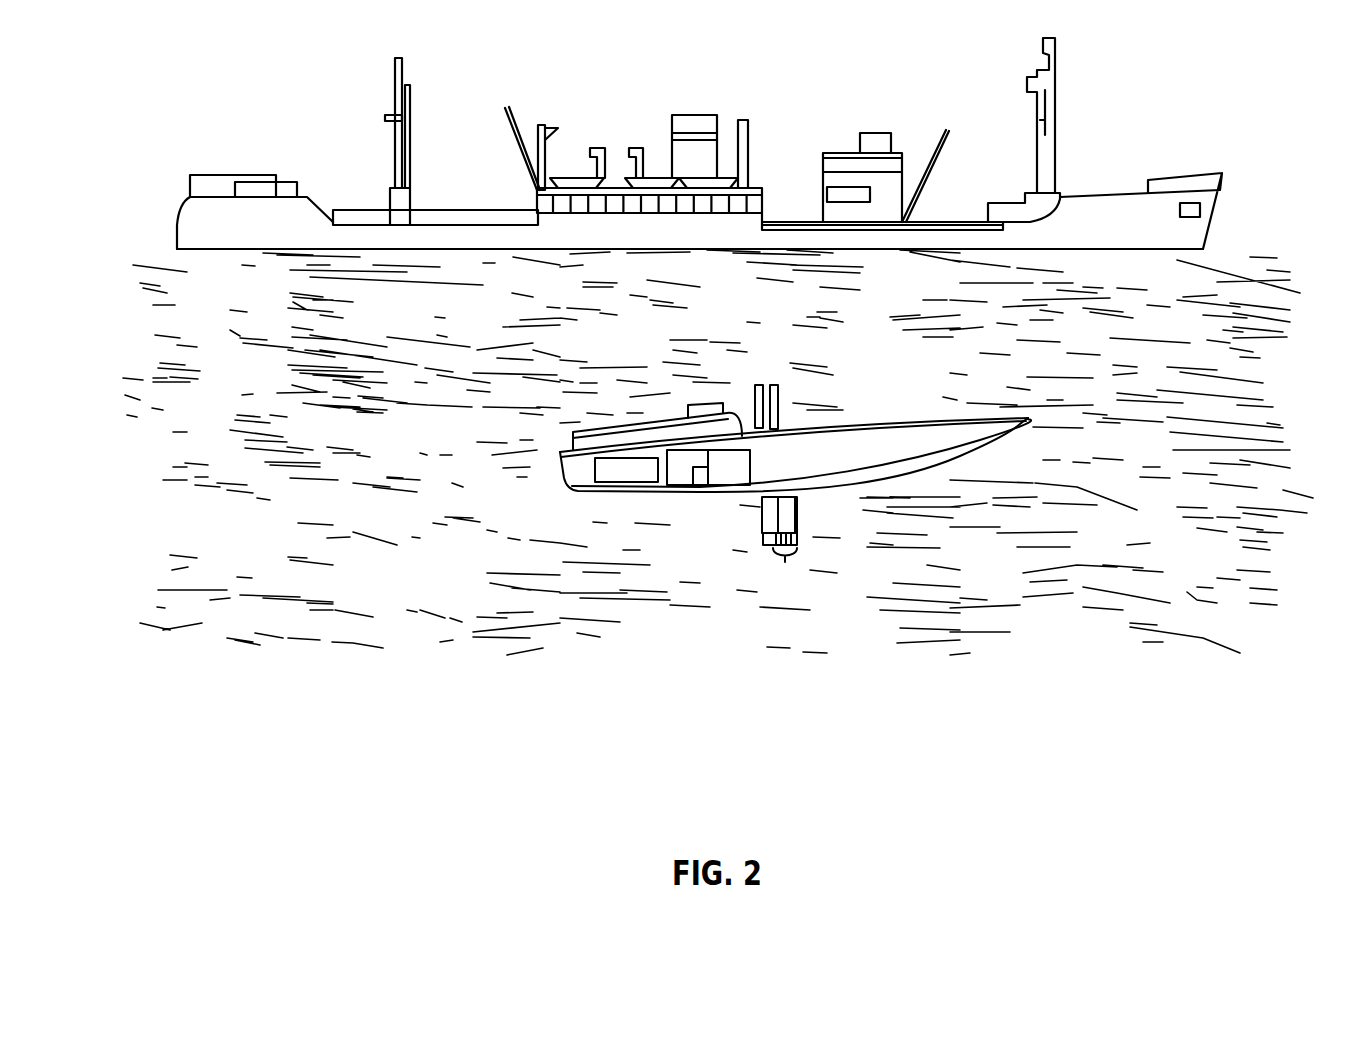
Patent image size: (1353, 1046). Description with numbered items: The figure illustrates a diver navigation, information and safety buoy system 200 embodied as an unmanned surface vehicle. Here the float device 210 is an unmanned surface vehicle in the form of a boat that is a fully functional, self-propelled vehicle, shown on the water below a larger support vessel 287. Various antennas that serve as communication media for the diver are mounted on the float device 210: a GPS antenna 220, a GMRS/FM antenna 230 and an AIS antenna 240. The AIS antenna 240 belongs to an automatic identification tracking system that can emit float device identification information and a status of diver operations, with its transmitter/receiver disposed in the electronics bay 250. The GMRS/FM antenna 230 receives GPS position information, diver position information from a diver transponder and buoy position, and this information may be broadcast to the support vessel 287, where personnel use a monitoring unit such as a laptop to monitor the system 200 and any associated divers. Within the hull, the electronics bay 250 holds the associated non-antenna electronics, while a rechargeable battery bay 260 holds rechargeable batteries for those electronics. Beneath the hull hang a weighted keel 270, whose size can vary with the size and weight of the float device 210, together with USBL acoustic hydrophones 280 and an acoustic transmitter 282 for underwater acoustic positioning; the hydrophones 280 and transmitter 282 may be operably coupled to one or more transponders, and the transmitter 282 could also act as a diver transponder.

The diver navigation, information and safety buoy system 200 is at (816, 537).
The float device 210 is at (922, 417).
The GPS antenna 220 is at (708, 403).
The GMRS/FM antenna 230 is at (759, 387).
The AIS antenna 240 is at (776, 408).
The electronics bay 250 is at (688, 469).
The rechargeable battery bay 260 is at (731, 486).
The weighted keel 270 is at (797, 513).
The USBL acoustic hydrophones 280 is at (786, 571).
The acoustic transmitter 282 is at (762, 548).
The support vessel 287 is at (252, 175).